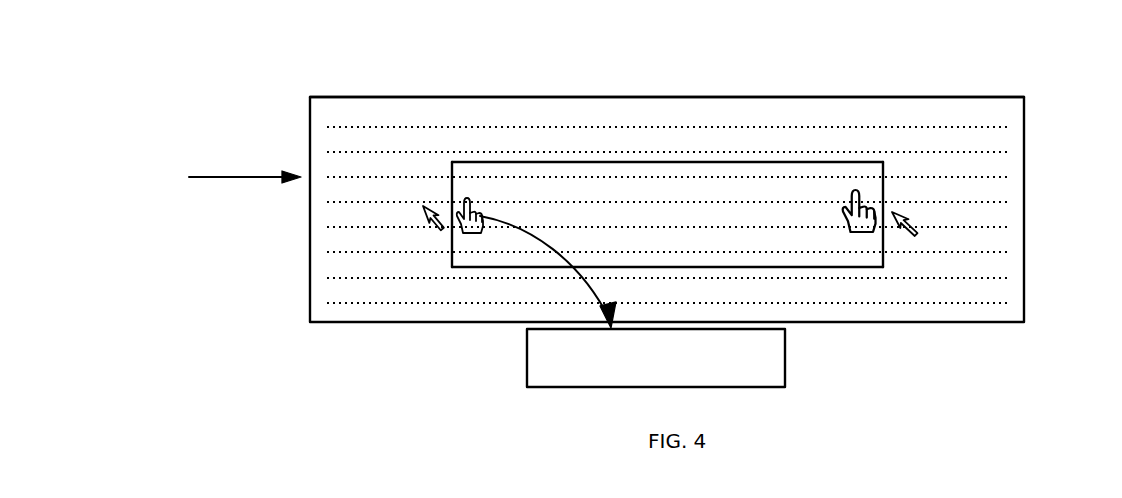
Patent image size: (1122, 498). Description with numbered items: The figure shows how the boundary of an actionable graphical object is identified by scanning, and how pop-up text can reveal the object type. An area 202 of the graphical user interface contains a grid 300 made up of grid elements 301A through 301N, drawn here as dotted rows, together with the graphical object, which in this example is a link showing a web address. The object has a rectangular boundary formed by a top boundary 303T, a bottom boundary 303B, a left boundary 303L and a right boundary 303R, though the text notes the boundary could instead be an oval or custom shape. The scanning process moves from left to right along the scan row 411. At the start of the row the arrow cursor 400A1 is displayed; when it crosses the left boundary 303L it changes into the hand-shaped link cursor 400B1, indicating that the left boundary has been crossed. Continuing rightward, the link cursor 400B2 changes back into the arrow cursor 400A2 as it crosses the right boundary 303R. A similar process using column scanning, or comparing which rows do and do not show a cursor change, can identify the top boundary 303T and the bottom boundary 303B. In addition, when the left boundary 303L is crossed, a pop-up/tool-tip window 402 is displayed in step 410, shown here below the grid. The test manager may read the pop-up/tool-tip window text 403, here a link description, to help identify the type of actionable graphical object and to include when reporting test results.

The grid 300 is at (1013, 124).
The area 202 is at (693, 97).
The grid element 301A is at (327, 126).
The grid element 301N is at (1007, 302).
The scan row 411 is at (213, 178).
The top boundary 303T is at (610, 162).
The left boundary 303L is at (452, 240).
The right boundary 303R is at (883, 240).
The bottom boundary 303B is at (855, 268).
The arrow cursor 400A1 is at (425, 203).
The link cursor 400B1 is at (468, 197).
The link cursor 400B2 is at (860, 192).
The arrow cursor 400A2 is at (895, 210).
The step 410 is at (494, 222).
The pop-up/tool-tip window 402 is at (527, 365).
The pop-up/tool-tip window text 403 is at (752, 361).